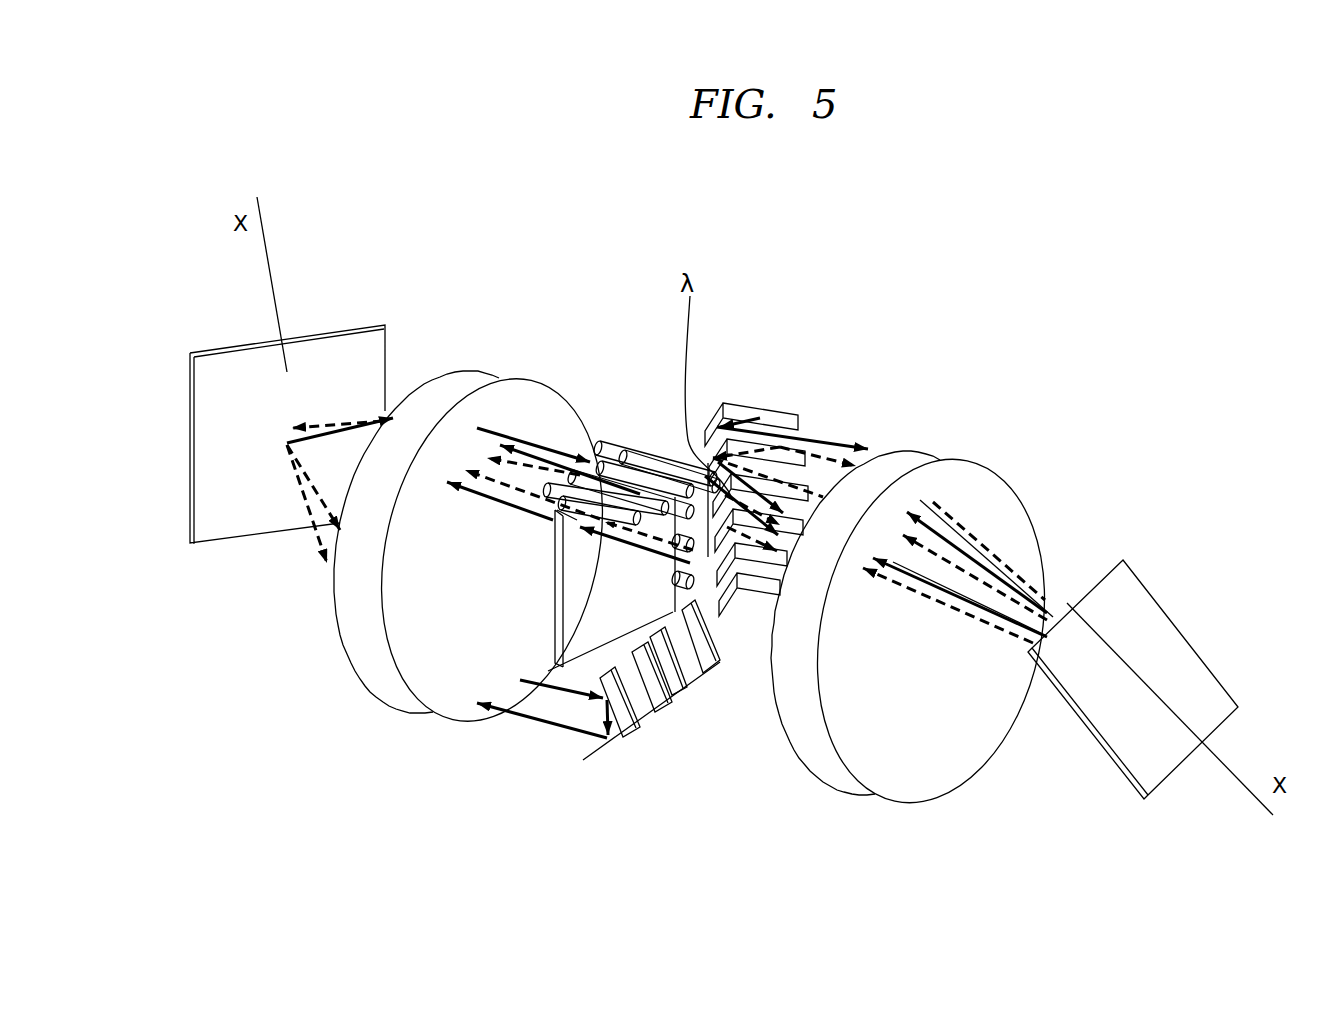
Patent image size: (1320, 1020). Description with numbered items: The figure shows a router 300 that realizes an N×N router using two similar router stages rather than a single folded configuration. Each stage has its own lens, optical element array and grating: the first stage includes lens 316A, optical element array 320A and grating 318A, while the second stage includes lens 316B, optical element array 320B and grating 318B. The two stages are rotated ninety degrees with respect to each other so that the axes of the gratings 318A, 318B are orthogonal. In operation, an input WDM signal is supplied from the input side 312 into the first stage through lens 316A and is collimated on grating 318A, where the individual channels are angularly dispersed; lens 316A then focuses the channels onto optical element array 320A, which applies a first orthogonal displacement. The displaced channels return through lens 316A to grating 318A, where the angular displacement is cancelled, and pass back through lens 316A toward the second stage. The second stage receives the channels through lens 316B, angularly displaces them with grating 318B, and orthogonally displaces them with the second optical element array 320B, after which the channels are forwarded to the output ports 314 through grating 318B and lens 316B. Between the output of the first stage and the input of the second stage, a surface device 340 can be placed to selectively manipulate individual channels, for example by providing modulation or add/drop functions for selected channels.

The router 300 is at (871, 327).
The fiber array 312 is at (698, 589).
The output ports 314 is at (636, 456).
The lens 316A is at (926, 457).
The lens 316B is at (493, 380).
The grating 318A is at (1128, 589).
The grating 318B is at (210, 518).
The optical element array 320A is at (731, 413).
The optical element array 320B is at (666, 748).
The surface device 340 is at (578, 588).